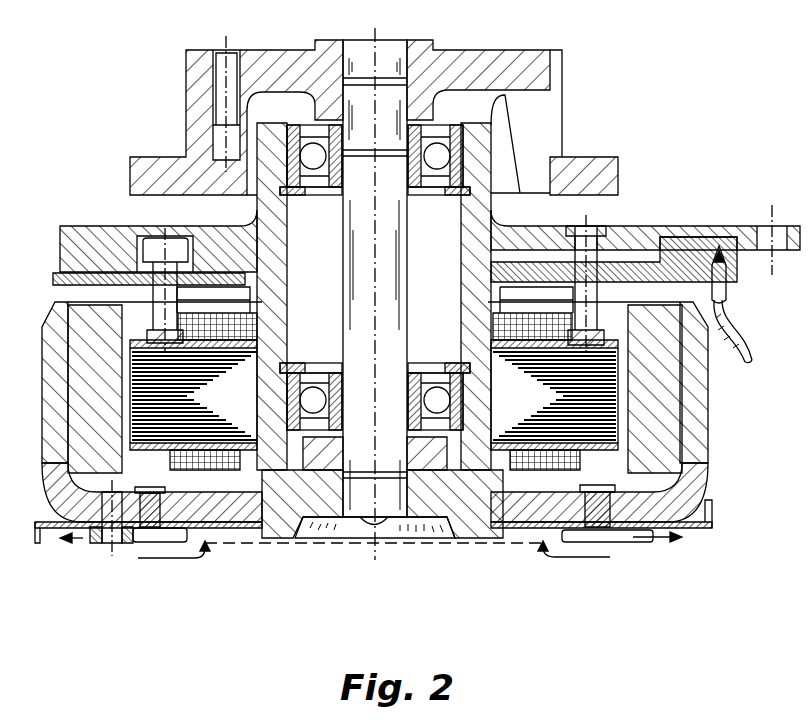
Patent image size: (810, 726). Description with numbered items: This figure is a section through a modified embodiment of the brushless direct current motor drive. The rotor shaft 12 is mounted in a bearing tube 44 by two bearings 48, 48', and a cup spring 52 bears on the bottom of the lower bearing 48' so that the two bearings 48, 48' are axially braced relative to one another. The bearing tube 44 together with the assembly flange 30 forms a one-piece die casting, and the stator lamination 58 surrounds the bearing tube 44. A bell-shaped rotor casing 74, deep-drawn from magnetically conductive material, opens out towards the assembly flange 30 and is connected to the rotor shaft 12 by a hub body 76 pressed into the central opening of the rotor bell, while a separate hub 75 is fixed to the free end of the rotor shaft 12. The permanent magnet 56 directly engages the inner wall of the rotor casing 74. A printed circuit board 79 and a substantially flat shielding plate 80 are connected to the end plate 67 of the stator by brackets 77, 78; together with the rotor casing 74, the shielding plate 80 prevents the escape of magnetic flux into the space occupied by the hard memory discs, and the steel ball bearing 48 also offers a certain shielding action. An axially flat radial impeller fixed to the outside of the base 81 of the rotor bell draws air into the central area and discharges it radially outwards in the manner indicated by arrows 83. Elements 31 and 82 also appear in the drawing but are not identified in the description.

The rotor shaft 12 is at (390, 240).
The assembly flange 30 is at (617, 232).
The lead wire 31 is at (735, 342).
The bearing tube 44 is at (287, 340).
The bearing 48 is at (375, 181).
The bearing 48' is at (375, 373).
The cup spring 52 is at (328, 432).
The permanent magnet 56 is at (655, 415).
The stator lamination 58 is at (600, 380).
The end plate 67 is at (272, 318).
The rotor casing 74 is at (697, 457).
The hub 75 is at (470, 57).
The hub body 76 is at (490, 532).
The bracket 77 is at (155, 238).
The bracket 78 is at (580, 230).
The printed circuit board 79 is at (682, 262).
The shielding plate 80 is at (80, 230).
The base 81 is at (233, 503).
The pad 82 is at (633, 538).
The arrows 83 is at (575, 558).